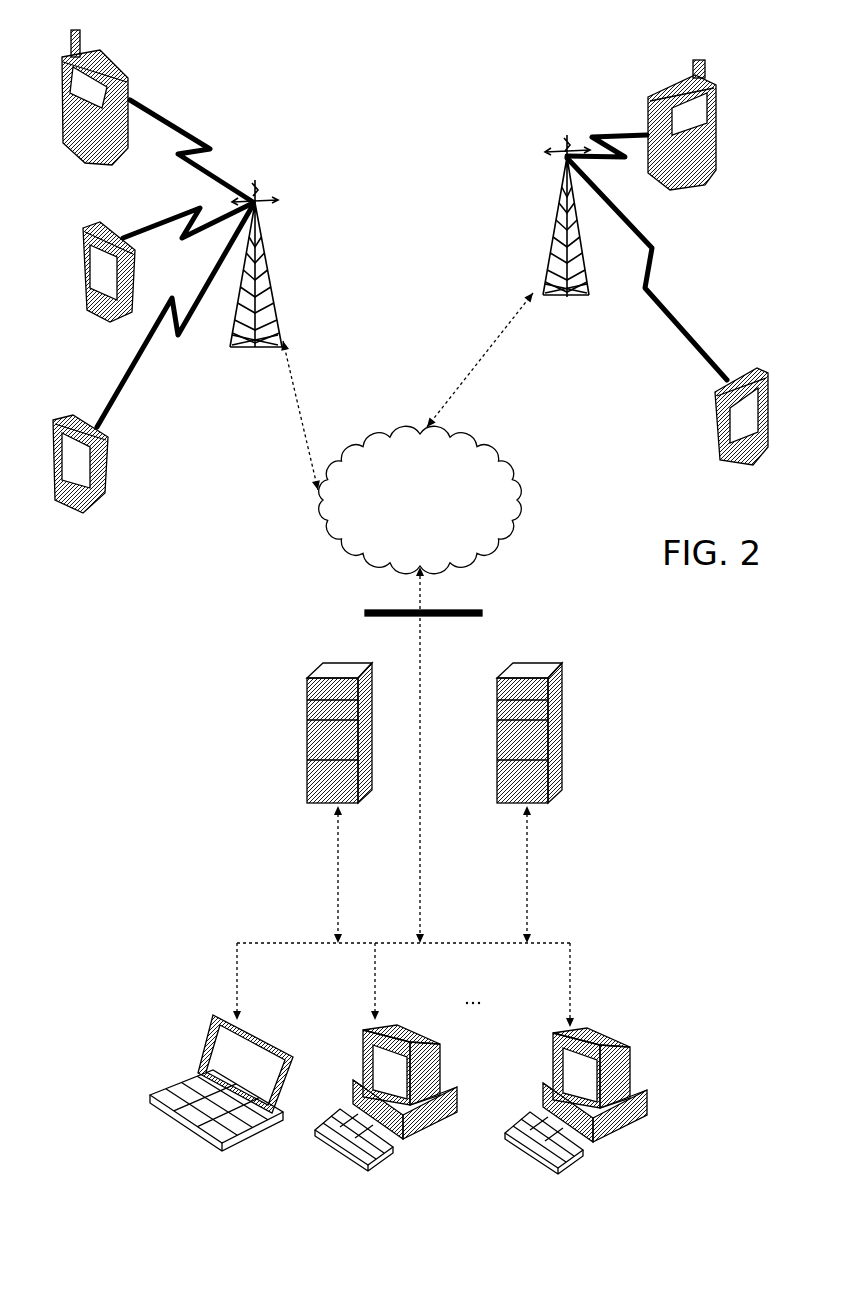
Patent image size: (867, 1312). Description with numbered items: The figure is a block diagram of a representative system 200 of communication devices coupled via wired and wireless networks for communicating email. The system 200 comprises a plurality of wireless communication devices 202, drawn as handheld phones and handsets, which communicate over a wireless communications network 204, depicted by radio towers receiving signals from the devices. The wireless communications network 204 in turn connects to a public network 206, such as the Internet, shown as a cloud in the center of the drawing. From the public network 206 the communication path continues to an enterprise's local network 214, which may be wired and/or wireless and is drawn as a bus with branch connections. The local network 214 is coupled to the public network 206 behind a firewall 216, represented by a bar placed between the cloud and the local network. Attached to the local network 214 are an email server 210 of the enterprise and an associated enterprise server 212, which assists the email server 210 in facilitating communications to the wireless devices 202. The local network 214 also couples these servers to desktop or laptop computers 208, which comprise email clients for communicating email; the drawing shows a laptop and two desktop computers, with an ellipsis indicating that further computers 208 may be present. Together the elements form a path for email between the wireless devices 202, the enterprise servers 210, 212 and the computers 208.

The system 200 is at (450, 167).
The wireless communication devices 202 is at (75, 148).
The wireless communications network 204 is at (233, 340).
The public network 206 is at (400, 531).
The desktop (or laptop) computers 208 is at (168, 1123).
The email server 210 is at (310, 805).
The enterprise server 212 is at (497, 805).
The local network 214 is at (312, 945).
The firewall 216 is at (370, 612).